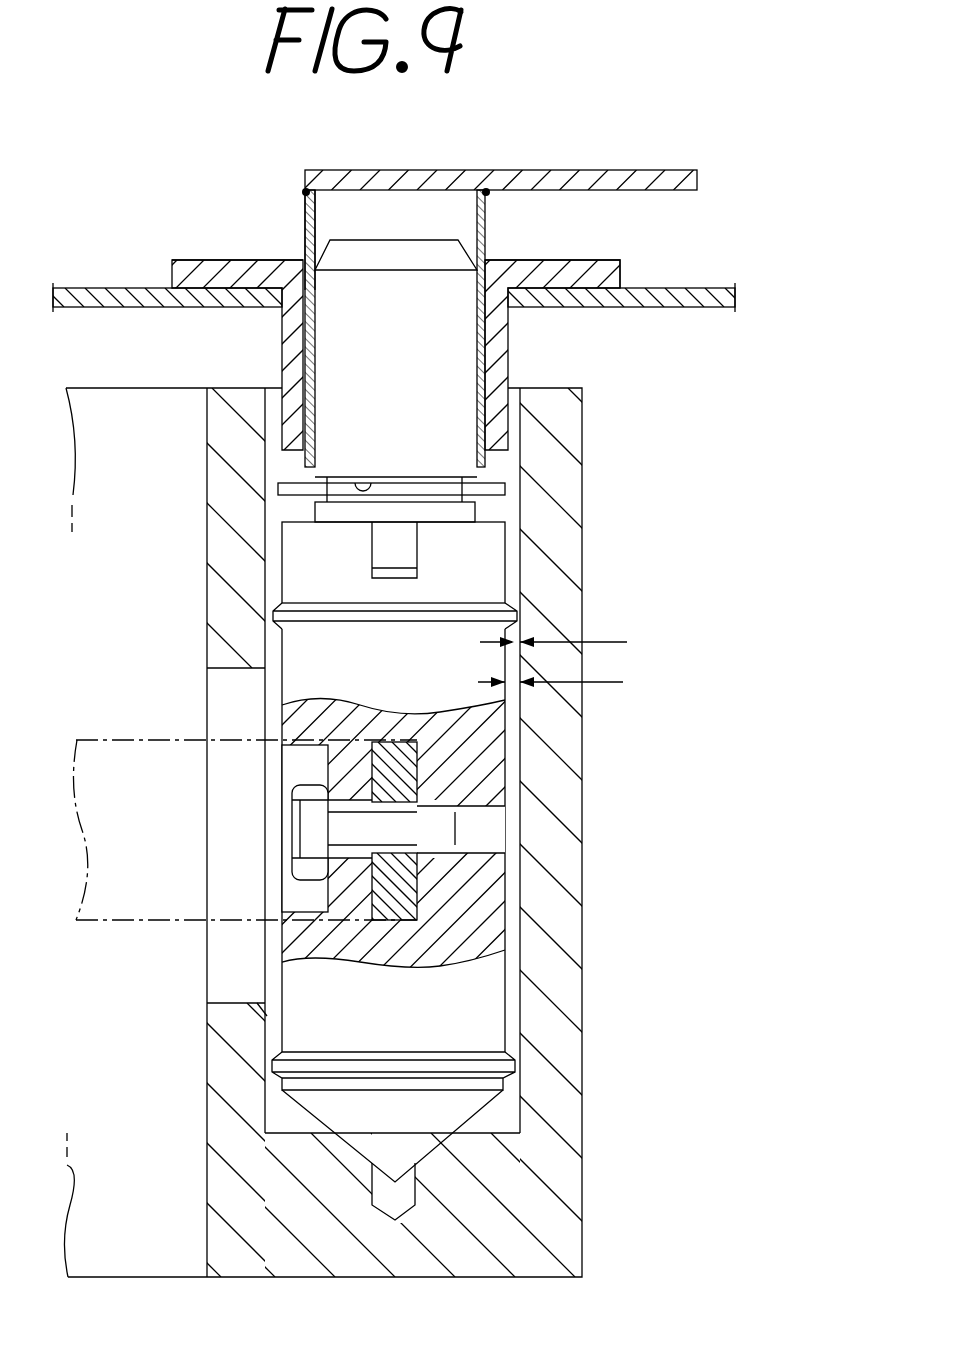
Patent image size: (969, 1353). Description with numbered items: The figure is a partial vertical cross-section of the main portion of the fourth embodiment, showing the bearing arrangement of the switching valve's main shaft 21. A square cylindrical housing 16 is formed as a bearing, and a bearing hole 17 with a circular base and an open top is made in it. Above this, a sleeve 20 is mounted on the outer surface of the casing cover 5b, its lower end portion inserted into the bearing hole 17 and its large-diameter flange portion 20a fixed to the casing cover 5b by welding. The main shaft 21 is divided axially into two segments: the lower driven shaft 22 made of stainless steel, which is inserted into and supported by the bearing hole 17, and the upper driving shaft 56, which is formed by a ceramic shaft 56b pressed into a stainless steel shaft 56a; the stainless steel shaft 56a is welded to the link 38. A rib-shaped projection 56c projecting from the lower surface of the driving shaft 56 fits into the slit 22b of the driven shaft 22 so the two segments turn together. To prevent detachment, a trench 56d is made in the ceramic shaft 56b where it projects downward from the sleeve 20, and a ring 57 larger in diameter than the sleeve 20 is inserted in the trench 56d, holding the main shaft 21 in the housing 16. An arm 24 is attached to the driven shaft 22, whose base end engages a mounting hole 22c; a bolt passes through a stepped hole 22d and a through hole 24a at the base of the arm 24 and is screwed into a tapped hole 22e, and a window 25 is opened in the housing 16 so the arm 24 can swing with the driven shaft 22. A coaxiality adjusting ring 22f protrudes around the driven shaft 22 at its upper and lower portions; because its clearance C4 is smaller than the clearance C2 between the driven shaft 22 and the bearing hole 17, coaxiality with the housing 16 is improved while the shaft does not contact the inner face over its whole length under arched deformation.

The housing 16 is at (582, 1246).
The bearing hole 17 is at (511, 1112).
The sleeve 20 is at (510, 346).
The flange portion 20a is at (600, 261).
The main shaft 21 is at (255, 685).
The driven shaft 22 is at (455, 993).
The slit 22b is at (373, 540).
The mounting hole 22c is at (458, 801).
The stepped hole 22d is at (347, 836).
The tapped hole 22e is at (460, 833).
The coaxiality adjusting ring 22f is at (517, 614).
The arm 24 is at (417, 772).
The through hole 24a is at (417, 883).
The window 25 is at (233, 1003).
The link 38 is at (640, 170).
The casing cover 5b is at (705, 288).
The driving shaft 56 is at (518, 470).
The stainless steel shaft 56a is at (305, 262).
The ceramic shaft 56b is at (442, 370).
The rib-shaped projection 56c is at (400, 545).
The trench 56d is at (369, 483).
The ring 57 is at (278, 501).
The clearance of coaxiality adjusting ring C4 is at (581, 646).
The clearance of driven shaft C2 is at (580, 684).